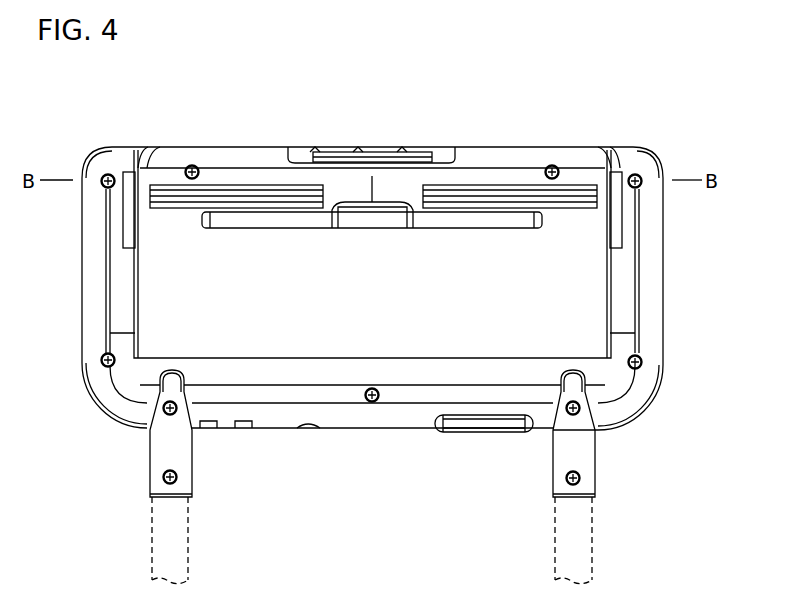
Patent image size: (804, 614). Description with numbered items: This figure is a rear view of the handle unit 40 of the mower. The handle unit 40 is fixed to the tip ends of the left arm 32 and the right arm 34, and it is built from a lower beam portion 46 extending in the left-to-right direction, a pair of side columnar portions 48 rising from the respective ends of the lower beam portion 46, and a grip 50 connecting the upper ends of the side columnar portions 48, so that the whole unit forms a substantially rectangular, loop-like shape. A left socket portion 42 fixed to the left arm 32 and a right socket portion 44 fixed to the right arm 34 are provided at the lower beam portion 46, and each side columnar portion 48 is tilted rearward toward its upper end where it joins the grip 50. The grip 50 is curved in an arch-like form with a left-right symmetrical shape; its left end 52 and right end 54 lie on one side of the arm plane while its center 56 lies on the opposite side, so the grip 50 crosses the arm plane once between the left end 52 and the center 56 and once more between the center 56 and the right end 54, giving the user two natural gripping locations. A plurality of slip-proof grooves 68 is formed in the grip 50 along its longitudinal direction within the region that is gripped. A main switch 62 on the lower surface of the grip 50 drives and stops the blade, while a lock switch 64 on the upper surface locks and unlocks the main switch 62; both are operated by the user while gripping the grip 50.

The handle unit 40 is at (640, 66).
The left arm 32 is at (152, 530).
The right arm 34 is at (592, 530).
The left socket portion 42 is at (150, 478).
The right socket portion 44 is at (592, 478).
The lower beam portion 46 is at (366, 358).
The side columnar portions 48 is at (664, 305).
The grip 50 is at (218, 152).
The left end of the grip 52 is at (97, 153).
The right end of the grip 54 is at (640, 157).
The center of the grip 56 is at (372, 182).
The main switch 62 is at (438, 230).
The lock switch 64 is at (420, 155).
The slip-proof grooves 68 is at (185, 192).